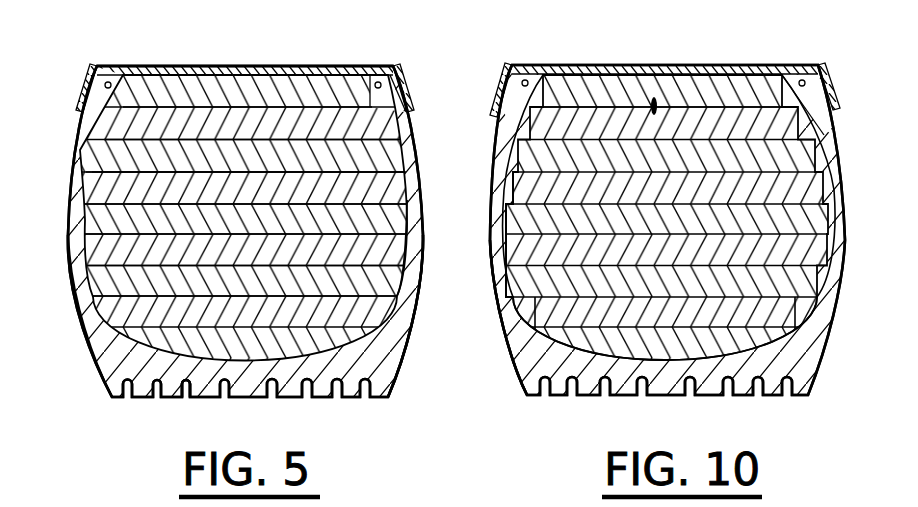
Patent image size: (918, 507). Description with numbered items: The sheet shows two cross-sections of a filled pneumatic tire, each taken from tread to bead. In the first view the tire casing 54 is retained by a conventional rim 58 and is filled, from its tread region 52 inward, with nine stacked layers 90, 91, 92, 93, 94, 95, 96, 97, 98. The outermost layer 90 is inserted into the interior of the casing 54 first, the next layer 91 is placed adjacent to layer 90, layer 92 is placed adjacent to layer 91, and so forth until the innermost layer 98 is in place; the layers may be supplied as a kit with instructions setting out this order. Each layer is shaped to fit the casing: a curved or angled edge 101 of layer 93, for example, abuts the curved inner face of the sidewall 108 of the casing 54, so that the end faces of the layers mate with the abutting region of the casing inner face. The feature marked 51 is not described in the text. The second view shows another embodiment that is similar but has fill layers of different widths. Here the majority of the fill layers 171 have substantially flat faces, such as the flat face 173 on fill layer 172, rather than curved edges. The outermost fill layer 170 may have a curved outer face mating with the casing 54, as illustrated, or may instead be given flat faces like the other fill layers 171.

In FIG. 5, the mounting flange 51 is at (395, 68).
In FIG. 5, the tread region 52 is at (166, 397).
In FIG. 5, the casing 54 is at (405, 348).
In FIG. 10, the casing 54 is at (823, 343).
In FIG. 5, the rim 58 is at (268, 66).
In FIG. 5, the outermost layer 90 is at (110, 381).
In FIG. 5, the layer 91 is at (110, 318).
In FIG. 5, the layer 92 is at (92, 280).
In FIG. 5, the layer 93 is at (100, 247).
In FIG. 5, the layer 94 is at (100, 217).
In FIG. 5, the layer 95 is at (103, 185).
In FIG. 5, the layer 96 is at (380, 158).
In FIG. 5, the layer 97 is at (375, 128).
In FIG. 5, the innermost layer 98 is at (150, 95).
In FIG. 5, the curved or angled edge 101 is at (410, 250).
In FIG. 5, the sidewall 108 is at (418, 207).
In FIG. 10, the outermost fill layer 170 is at (598, 385).
In FIG. 10, the fill layers 171 is at (655, 100).
In FIG. 10, the fill layer 172 is at (560, 342).
In FIG. 10, the flat face 173 is at (520, 303).